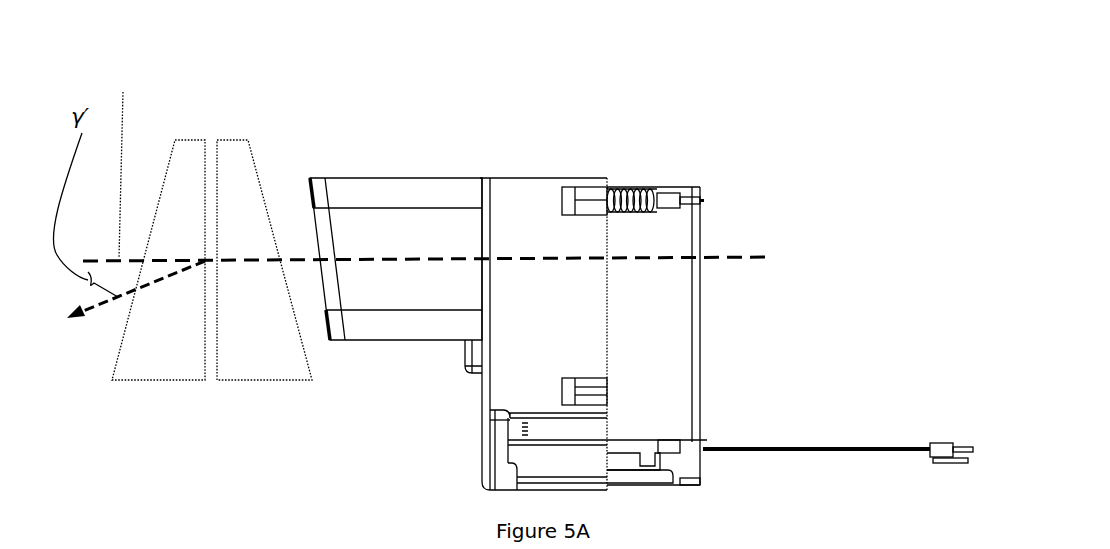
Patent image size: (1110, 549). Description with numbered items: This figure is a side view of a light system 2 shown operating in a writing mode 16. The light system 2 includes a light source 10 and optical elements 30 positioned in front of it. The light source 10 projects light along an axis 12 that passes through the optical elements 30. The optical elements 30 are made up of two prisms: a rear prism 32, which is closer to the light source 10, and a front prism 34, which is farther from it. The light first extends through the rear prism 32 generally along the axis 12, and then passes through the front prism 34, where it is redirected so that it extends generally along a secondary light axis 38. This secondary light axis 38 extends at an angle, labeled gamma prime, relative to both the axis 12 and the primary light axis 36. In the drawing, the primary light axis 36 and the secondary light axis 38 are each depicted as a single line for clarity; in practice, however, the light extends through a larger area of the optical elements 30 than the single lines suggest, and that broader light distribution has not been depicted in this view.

The light system 2 is at (778, 67).
The light source 10 is at (442, 178).
The axis 12 is at (745, 258).
The writing mode 16 is at (750, 156).
The optical elements 30 is at (274, 141).
The rear prism 32 is at (231, 130).
The front prism 34 is at (182, 126).
The primary light axis 36 is at (127, 157).
The secondary light axis 38 is at (118, 297).